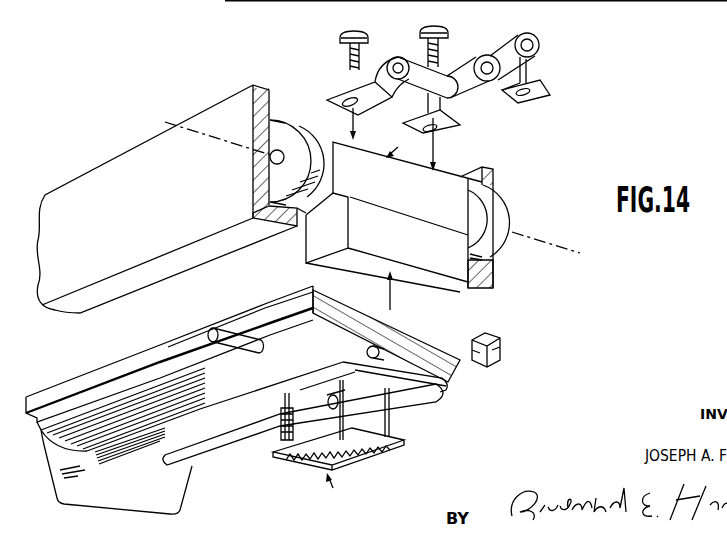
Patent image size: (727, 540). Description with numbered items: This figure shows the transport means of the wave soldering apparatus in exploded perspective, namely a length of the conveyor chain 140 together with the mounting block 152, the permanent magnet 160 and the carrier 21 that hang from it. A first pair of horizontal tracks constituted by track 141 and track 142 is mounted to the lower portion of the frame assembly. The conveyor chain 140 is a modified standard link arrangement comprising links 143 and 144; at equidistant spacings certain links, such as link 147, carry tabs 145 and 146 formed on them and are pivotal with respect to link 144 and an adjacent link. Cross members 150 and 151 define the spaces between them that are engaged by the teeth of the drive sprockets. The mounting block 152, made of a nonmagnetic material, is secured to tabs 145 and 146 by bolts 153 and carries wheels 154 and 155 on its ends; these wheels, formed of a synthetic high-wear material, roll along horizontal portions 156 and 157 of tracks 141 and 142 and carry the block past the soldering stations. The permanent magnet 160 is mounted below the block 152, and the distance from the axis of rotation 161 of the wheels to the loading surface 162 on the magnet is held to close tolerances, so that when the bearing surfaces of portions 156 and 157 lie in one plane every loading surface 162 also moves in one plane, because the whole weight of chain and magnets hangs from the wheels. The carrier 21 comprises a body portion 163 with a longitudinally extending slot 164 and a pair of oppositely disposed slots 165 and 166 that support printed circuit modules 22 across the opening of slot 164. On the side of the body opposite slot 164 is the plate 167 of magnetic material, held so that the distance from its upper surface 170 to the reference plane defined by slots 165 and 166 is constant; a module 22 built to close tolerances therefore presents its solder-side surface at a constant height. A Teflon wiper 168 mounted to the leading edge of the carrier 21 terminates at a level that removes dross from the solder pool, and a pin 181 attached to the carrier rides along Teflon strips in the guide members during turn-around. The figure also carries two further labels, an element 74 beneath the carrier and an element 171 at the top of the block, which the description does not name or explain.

The carrier 21 is at (252, 447).
The printed circuit module 22 is at (338, 443).
The spring 74 is at (338, 445).
The conveyor chain 140 is at (535, 32).
The track 141 is at (228, 113).
The track 142 is at (495, 172).
The link 143 is at (504, 46).
The link 144 is at (456, 64).
The tab 145 is at (341, 108).
The tab 146 is at (460, 133).
The link 147 is at (441, 108).
The cross member 150 is at (366, 128).
The cross member 151 is at (416, 54).
The mounting block 152 is at (397, 194).
The bolt 153 is at (341, 40).
The wheel 154 is at (273, 122).
The wheel 155 is at (503, 194).
The horizontal portion 156 is at (256, 216).
The horizontal portion 157 is at (495, 279).
The permanent magnet 160 is at (317, 243).
The axis of rotation 161 is at (237, 148).
The loading surface 162 is at (343, 269).
The body portion 163 is at (500, 353).
The longitudinally extending slot 164 is at (452, 373).
The slot 165 is at (366, 352).
The slot 166 is at (448, 389).
The plate 167 is at (440, 332).
The Teflon wiper 168 is at (170, 504).
The upper surface 170 is at (363, 322).
The top surface 171 is at (401, 147).
The pin 181 is at (231, 332).